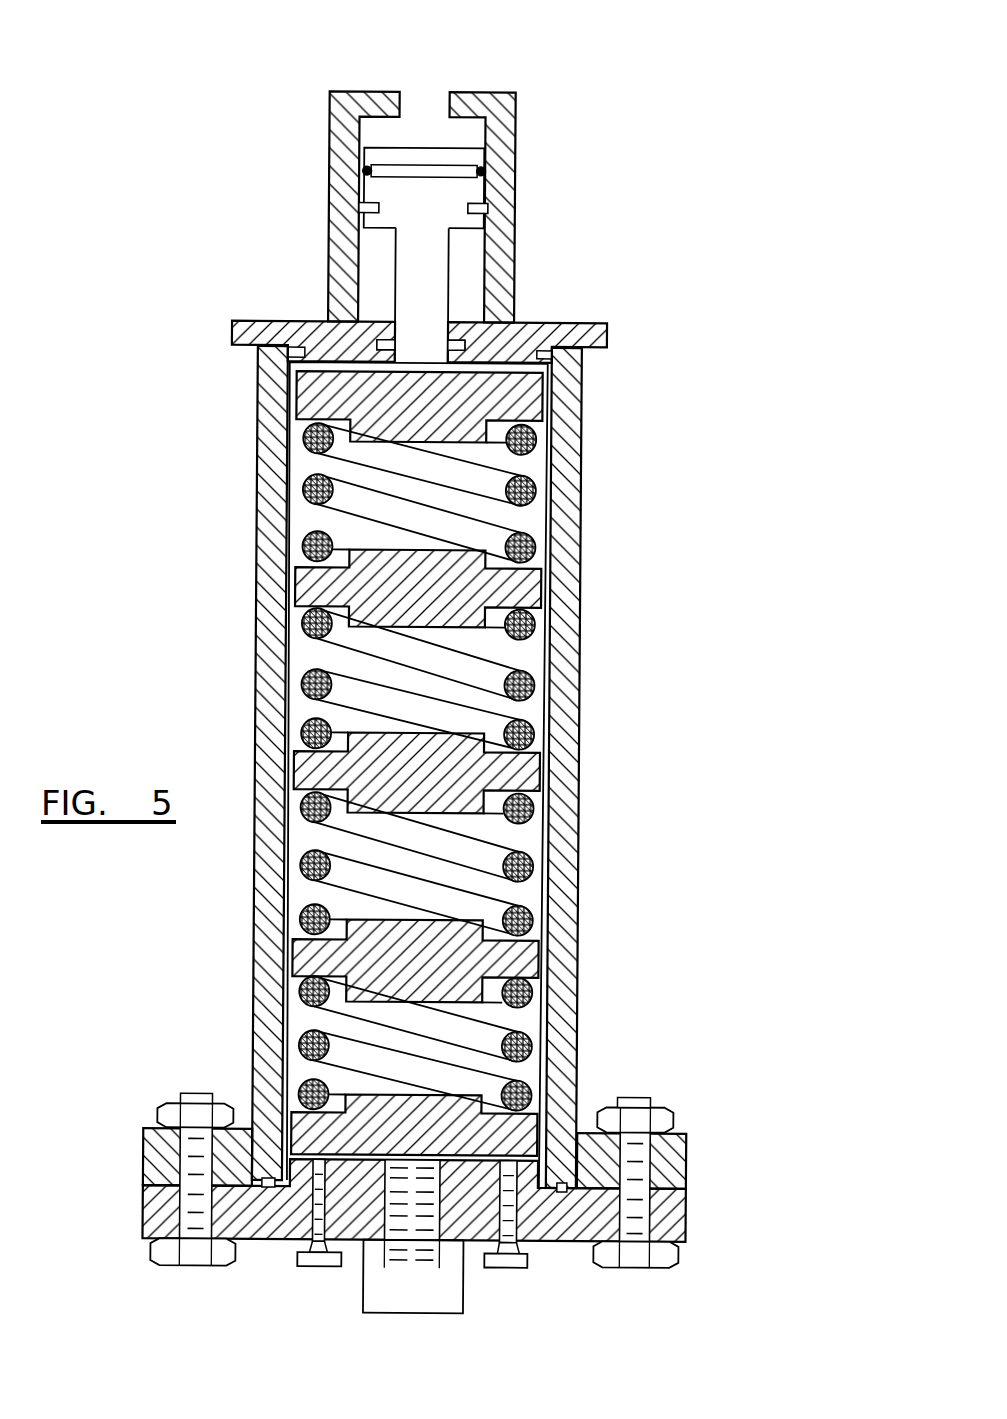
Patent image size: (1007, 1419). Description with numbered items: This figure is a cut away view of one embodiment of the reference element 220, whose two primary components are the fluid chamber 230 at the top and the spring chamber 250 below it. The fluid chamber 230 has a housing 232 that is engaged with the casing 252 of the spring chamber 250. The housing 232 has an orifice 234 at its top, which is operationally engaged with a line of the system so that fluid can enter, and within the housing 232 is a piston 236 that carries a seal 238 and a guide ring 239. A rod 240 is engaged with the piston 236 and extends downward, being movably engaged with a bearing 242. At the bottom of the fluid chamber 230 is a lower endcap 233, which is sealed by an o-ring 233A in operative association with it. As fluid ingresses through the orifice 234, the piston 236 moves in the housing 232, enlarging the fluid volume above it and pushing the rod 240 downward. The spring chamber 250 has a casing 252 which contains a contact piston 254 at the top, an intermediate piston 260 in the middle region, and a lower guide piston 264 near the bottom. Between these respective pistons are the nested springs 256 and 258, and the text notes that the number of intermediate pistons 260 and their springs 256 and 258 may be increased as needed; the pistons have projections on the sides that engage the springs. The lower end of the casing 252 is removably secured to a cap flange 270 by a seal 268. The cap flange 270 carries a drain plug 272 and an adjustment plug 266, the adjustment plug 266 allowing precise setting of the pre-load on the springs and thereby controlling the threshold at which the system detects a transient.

The reference element 220 is at (208, 340).
The fluid chamber 230 is at (537, 133).
The housing 232 is at (342, 268).
The lower endcap 233 is at (607, 334).
The o-ring 233A is at (550, 355).
The orifice 234 is at (424, 105).
The piston 236 is at (467, 157).
The seal 238 is at (364, 171).
The guide ring 239 is at (362, 210).
The rod 240 is at (417, 302).
The bearing 242 is at (456, 128).
The spring chamber 250 is at (615, 409).
The casing 252 is at (272, 931).
The contact piston 254 is at (520, 404).
The nested spring 256 is at (549, 536).
The nested spring 258 is at (528, 689).
The intermediate piston 260 is at (507, 594).
The lower guide piston 264 is at (526, 1122).
The adjustment plug 266 is at (420, 1300).
The seal 268 is at (276, 1189).
The cap flange 270 is at (548, 1229).
The drain plug 272 is at (328, 1264).